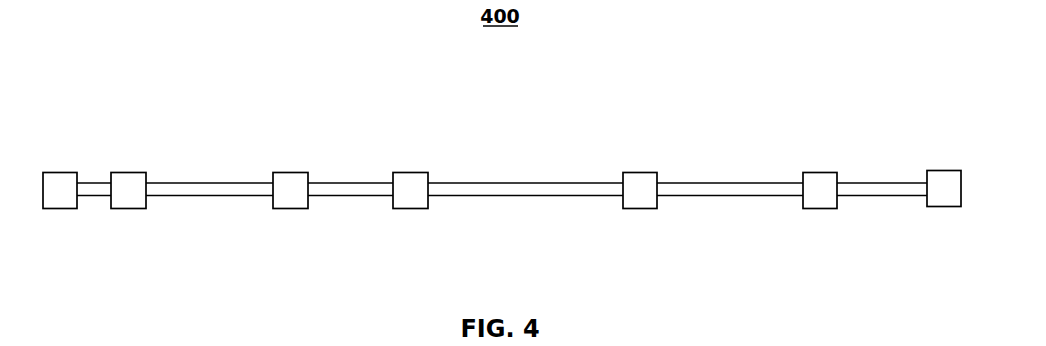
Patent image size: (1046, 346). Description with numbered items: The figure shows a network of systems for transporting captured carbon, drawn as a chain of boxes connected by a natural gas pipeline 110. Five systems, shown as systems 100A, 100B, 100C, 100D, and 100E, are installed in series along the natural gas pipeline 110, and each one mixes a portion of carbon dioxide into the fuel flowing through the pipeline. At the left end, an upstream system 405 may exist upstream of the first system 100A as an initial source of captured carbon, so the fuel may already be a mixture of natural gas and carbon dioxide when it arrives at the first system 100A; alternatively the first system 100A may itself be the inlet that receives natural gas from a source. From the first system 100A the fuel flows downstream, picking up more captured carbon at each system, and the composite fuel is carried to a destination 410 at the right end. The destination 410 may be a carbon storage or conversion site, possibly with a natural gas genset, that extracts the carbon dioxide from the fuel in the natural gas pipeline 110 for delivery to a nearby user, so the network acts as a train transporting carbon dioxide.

The upstream system 405 is at (58, 209).
The destination 410 is at (945, 207).
The natural gas pipeline 110 is at (220, 198).
The first system 100A is at (127, 172).
The system 100B is at (292, 172).
The system 100C is at (413, 172).
The system 100D is at (642, 172).
The system 100E is at (818, 172).